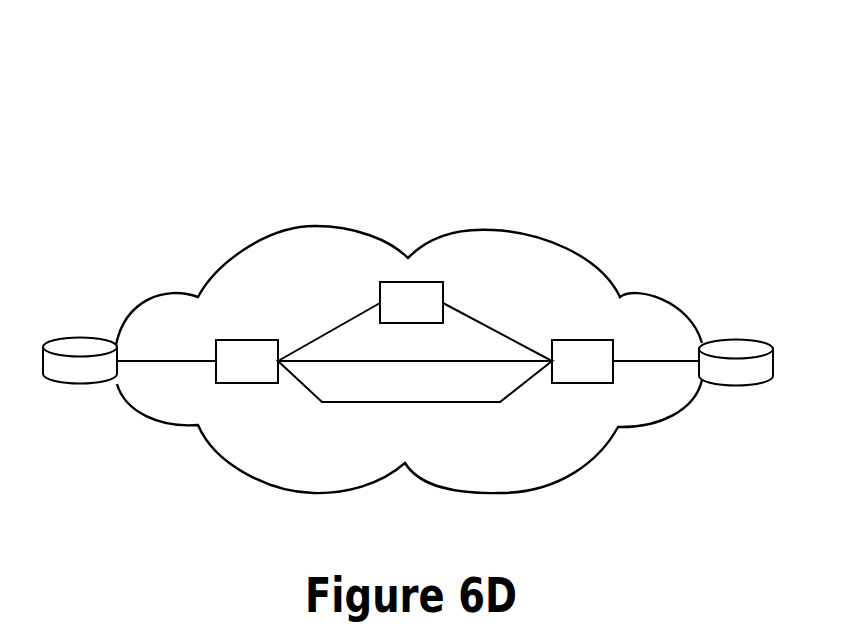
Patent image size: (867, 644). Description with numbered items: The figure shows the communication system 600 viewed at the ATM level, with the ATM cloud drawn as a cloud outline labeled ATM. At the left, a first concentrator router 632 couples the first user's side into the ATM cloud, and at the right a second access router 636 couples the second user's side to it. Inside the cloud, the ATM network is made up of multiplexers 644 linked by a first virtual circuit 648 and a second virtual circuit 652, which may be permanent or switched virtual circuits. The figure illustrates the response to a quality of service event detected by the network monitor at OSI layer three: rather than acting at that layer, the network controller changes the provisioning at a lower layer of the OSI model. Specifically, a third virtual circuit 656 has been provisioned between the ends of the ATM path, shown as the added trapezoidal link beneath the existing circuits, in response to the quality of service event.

The communication system 600 is at (258, 124).
The first concentrator router 632 is at (78, 336).
The second access router 636 is at (743, 338).
The multiplexers 644 is at (412, 282).
The first virtual circuit 648 is at (330, 327).
The second virtual circuit 652 is at (487, 361).
The third virtual circuit 656 is at (519, 388).